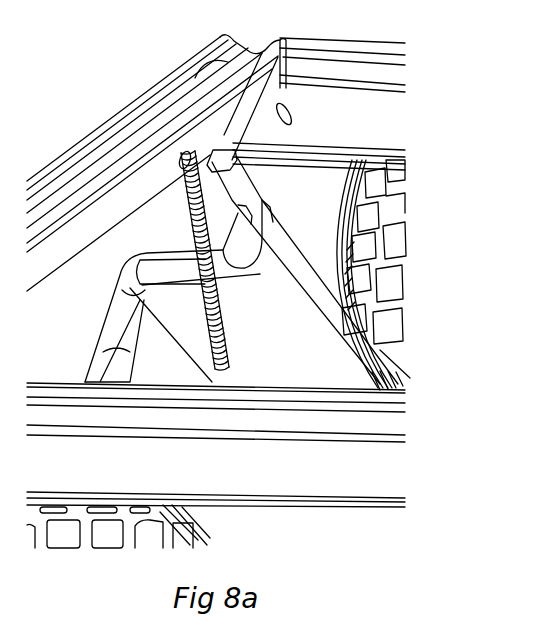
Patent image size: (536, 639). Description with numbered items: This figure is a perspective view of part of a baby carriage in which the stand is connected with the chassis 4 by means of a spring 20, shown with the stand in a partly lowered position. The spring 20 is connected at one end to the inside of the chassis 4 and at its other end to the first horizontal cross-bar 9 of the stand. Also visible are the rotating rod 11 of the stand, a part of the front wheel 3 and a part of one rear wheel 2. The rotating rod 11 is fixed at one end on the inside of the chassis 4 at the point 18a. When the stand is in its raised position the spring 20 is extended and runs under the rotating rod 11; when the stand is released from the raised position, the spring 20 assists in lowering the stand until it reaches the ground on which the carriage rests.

The chassis 4 is at (100, 137).
The point 18a is at (218, 157).
The rotating rod 11 is at (288, 238).
The spring 20 is at (218, 327).
The first horizontal cross-bar 9 is at (180, 318).
The rear wheel 2 is at (400, 238).
The front wheel 3 is at (50, 530).